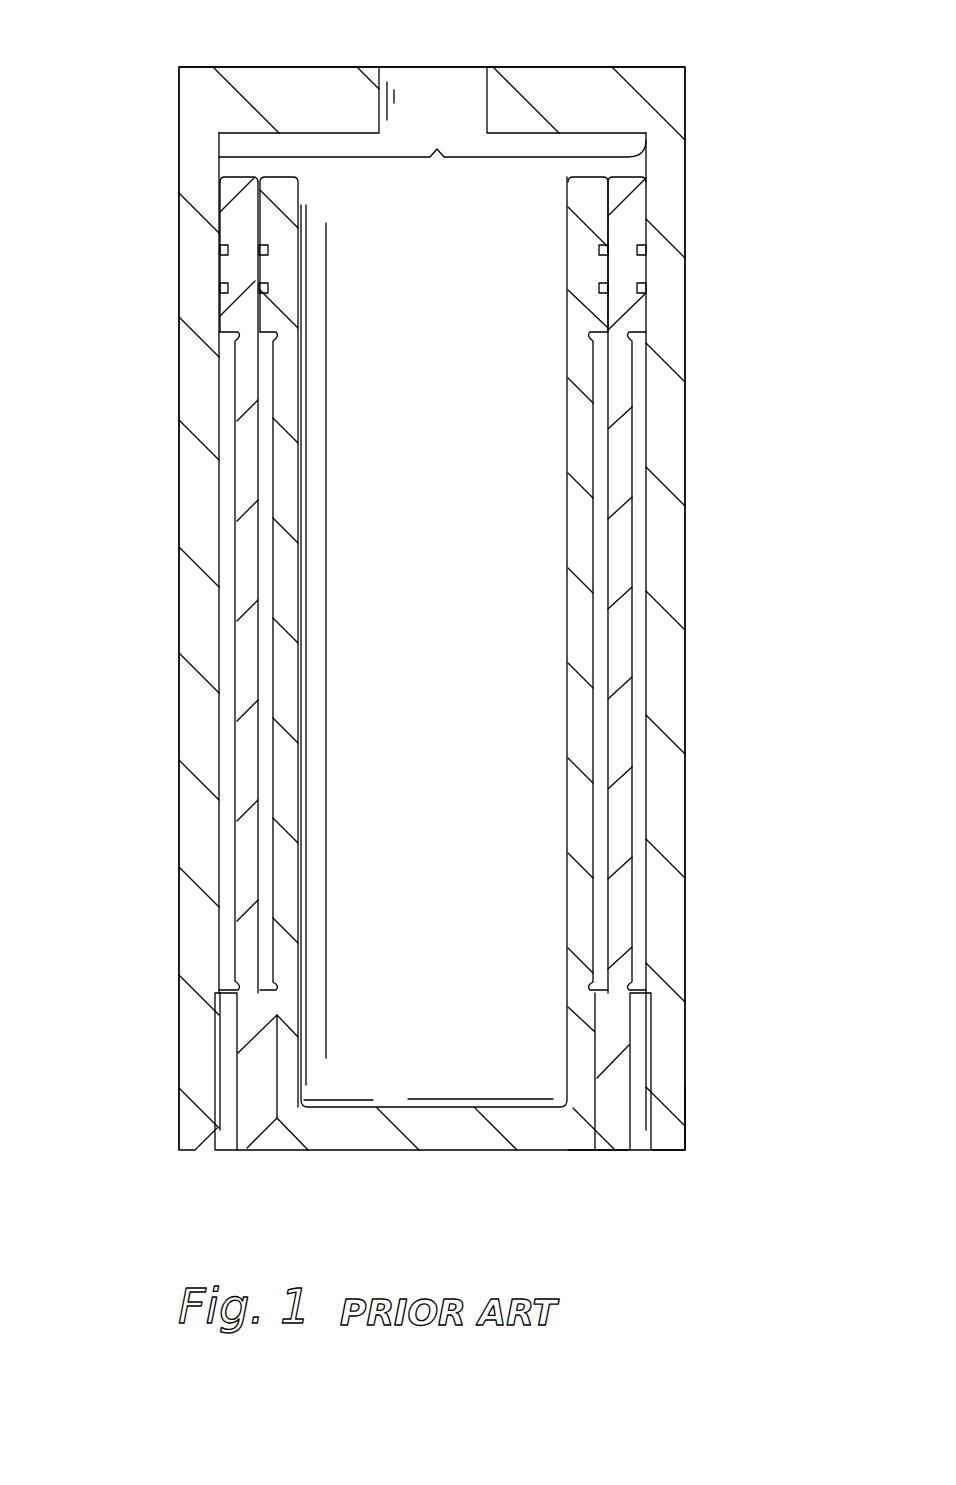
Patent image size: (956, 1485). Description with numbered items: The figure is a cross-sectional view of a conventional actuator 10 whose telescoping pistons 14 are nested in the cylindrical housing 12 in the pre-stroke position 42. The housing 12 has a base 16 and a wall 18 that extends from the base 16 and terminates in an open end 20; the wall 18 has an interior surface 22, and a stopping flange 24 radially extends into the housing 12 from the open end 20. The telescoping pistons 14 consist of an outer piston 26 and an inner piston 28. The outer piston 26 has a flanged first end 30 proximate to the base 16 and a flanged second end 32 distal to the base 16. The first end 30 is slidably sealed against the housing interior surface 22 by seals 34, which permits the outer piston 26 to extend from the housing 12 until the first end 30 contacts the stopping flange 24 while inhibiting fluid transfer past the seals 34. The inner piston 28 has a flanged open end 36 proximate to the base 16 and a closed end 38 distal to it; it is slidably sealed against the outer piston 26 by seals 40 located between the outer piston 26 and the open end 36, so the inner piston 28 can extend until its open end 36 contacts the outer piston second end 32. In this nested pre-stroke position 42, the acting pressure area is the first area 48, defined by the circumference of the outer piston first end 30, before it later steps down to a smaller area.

The actuator 10 is at (822, 111).
The housing 12 is at (181, 503).
The telescoping pistons 14 is at (642, 1193).
The base 16 is at (665, 67).
The wall 18 is at (190, 458).
The open end 20 is at (685, 1150).
The interior surface 22 is at (230, 553).
The stopping flange 24 is at (657, 1053).
The outer piston 26 is at (636, 546).
The inner piston 28 is at (596, 612).
The flanged first end 30 is at (635, 168).
The flanged second end 32 is at (613, 1150).
The seals 34 is at (646, 285).
The flanged open end 36 is at (258, 168).
The closed end 38 is at (400, 1150).
The seals 40 is at (260, 284).
The pre-stroke position 42 is at (164, 854).
The first area 48 is at (432, 135).